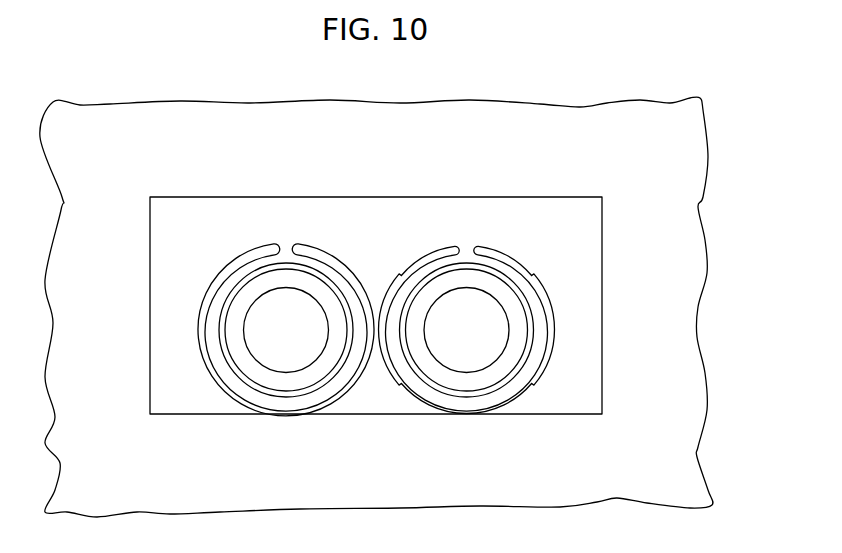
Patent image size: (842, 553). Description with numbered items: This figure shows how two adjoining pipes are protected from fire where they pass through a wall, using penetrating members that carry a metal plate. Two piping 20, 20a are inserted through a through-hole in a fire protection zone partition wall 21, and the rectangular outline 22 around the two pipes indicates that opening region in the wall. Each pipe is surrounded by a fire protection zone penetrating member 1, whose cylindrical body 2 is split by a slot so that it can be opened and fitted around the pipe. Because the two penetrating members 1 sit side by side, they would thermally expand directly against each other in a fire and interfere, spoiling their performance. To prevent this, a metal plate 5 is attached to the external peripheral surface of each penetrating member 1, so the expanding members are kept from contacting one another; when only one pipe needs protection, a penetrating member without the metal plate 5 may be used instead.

The fire protection zone penetrating member 1 is at (222, 258).
The cylindrical body 2 is at (322, 265).
The metal plate 5 is at (205, 352).
The piping 20 is at (283, 380).
The piping 20a is at (467, 380).
The fire protection zone partition wall 21 is at (688, 205).
The recess 22 is at (587, 258).